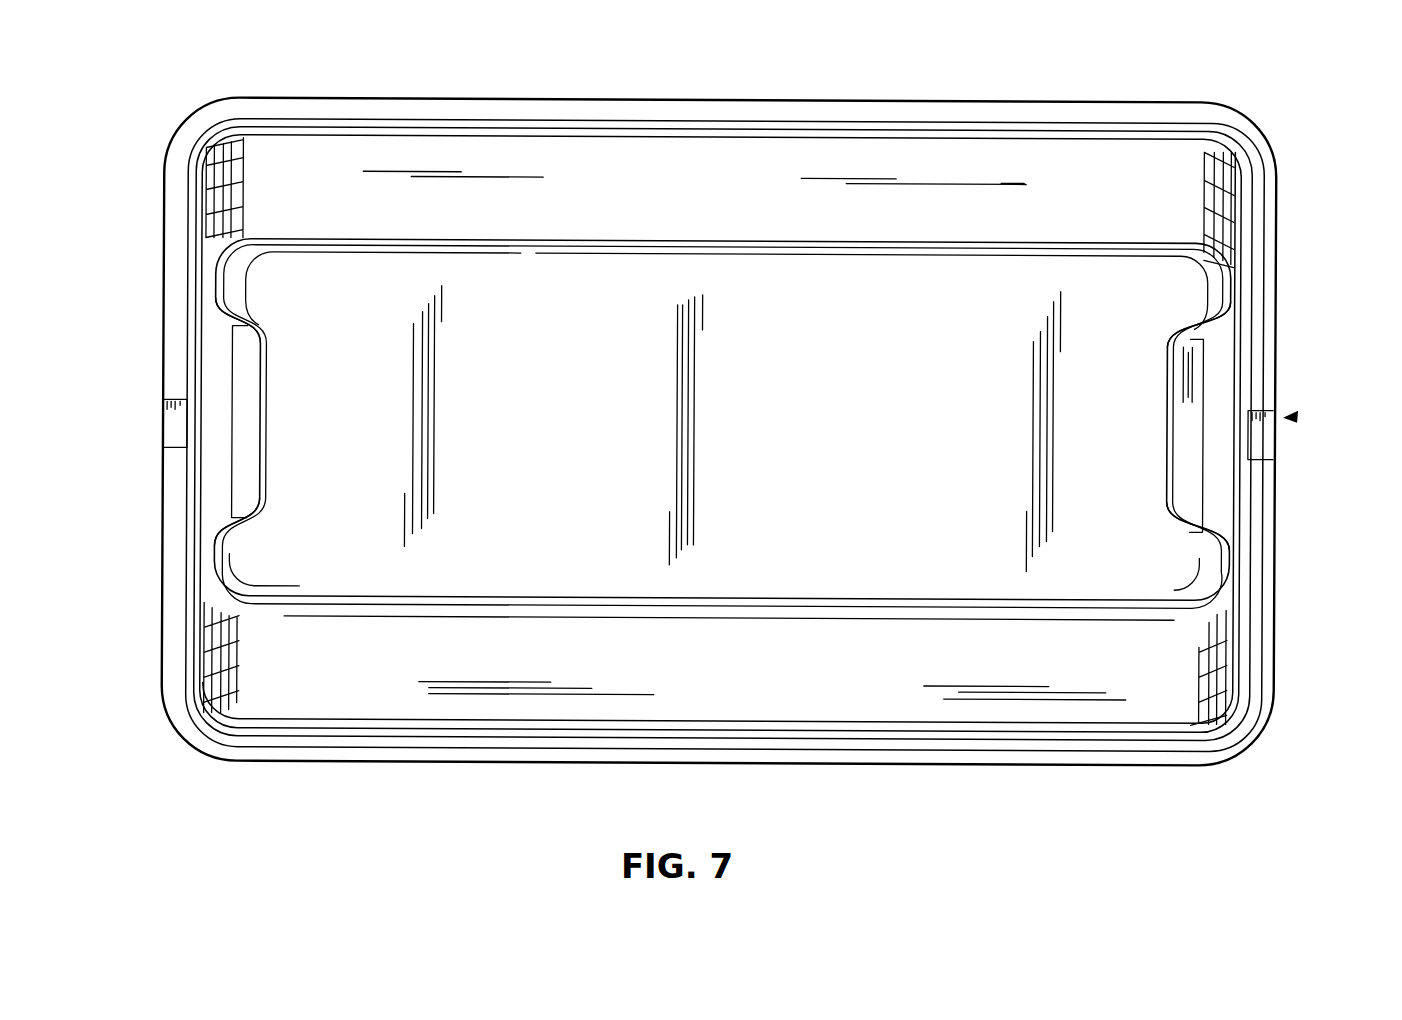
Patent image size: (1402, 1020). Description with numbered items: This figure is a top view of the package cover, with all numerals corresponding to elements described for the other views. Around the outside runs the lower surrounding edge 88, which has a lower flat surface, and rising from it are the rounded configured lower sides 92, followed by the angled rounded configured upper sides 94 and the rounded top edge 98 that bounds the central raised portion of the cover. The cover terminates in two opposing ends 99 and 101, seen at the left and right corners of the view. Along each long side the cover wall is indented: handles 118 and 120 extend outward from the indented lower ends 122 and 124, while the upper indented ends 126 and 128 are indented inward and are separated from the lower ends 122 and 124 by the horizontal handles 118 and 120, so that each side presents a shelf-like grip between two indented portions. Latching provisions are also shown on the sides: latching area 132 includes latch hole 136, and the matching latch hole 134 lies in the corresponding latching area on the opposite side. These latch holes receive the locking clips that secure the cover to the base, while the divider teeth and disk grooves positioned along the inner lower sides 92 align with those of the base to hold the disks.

The lower surrounding edge 88 is at (484, 762).
The rounded configured lower sides 92 is at (662, 99).
The angled rounded configured upper sides 94 is at (676, 208).
The rounded top edge 98 is at (838, 431).
The opposing end 99 is at (205, 192).
The opposing end 101 is at (1237, 258).
The handle 118 is at (230, 370).
The handle 120 is at (1205, 397).
The indented lower end 122 is at (218, 339).
The indented lower end 124 is at (1218, 356).
The upper indented end 126 is at (262, 500).
The upper indented end 128 is at (1173, 490).
The latching area 132 is at (1294, 414).
The latch hole 134 is at (173, 427).
The latch hole 136 is at (1262, 440).